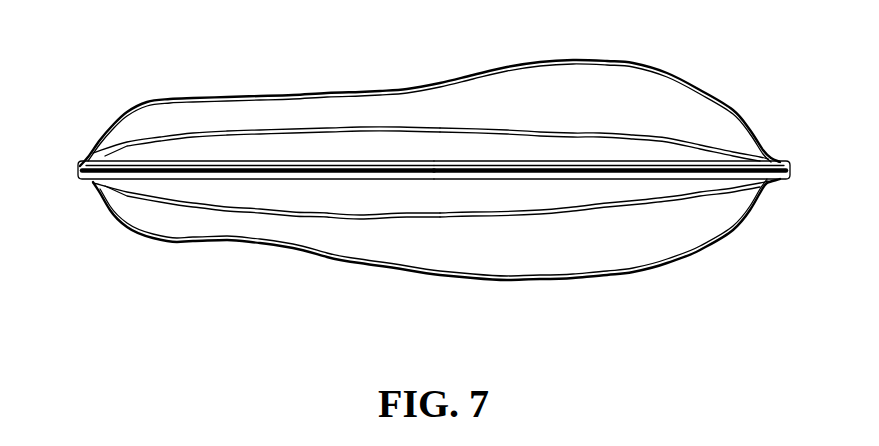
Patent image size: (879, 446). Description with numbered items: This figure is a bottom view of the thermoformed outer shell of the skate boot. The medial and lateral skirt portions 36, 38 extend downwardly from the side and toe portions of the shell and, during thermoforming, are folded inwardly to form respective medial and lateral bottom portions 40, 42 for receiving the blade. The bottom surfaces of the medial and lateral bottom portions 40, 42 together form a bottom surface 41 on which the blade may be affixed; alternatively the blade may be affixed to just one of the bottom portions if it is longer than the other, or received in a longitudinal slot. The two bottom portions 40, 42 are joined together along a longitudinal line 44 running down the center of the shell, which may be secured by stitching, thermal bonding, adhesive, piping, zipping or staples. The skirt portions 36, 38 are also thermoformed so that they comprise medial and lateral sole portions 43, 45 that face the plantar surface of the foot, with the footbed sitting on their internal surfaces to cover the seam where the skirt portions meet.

The medial skirt portion 36 is at (532, 195).
The lateral skirt portion 38 is at (532, 145).
The medial bottom portion 40 is at (197, 188).
The bottom surface 41 is at (147, 165).
The lateral bottom portion 42 is at (195, 153).
The medial sole portion 43 is at (388, 253).
The longitudinal line 44 is at (705, 167).
The lateral sole portion 45 is at (388, 108).